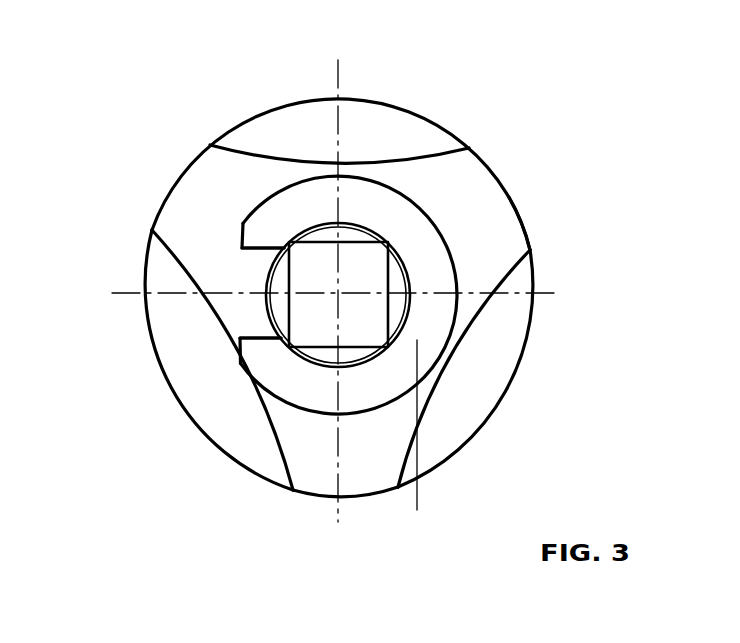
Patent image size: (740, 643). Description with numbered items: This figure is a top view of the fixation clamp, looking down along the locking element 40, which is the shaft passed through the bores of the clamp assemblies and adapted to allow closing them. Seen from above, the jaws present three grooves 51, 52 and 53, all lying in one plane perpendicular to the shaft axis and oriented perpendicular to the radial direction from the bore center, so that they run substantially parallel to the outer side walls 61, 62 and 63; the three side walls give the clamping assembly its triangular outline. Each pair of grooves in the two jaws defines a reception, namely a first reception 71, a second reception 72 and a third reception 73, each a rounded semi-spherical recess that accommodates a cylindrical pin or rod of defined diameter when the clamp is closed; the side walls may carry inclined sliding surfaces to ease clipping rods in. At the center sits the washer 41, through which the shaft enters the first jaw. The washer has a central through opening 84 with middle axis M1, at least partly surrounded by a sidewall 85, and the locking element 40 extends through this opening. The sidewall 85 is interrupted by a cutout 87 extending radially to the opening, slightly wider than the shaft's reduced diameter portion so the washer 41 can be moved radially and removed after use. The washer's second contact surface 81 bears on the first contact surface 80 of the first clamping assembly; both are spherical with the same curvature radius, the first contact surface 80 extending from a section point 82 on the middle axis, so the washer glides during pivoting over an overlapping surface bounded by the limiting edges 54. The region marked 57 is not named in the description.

The locking element 40 is at (362, 257).
The washer 41 is at (392, 228).
The first groove 51 is at (339, 93).
The second groove 52 is at (502, 391).
The third groove 53 is at (222, 381).
The limiting edges 54 is at (240, 150).
The side region 57 is at (441, 436).
The first outer side wall 61 is at (264, 103).
The second outer side wall 62 is at (493, 407).
The third outer side wall 63 is at (190, 412).
The first reception 71 is at (366, 128).
The second reception 72 is at (502, 391).
The third reception 73 is at (228, 414).
The first contact surface 80 is at (505, 233).
The second contact surface 81 is at (433, 283).
The section point 82 is at (237, 279).
The central through opening 84 is at (367, 270).
The sidewall 85 is at (268, 215).
The cutout 87 is at (257, 317).